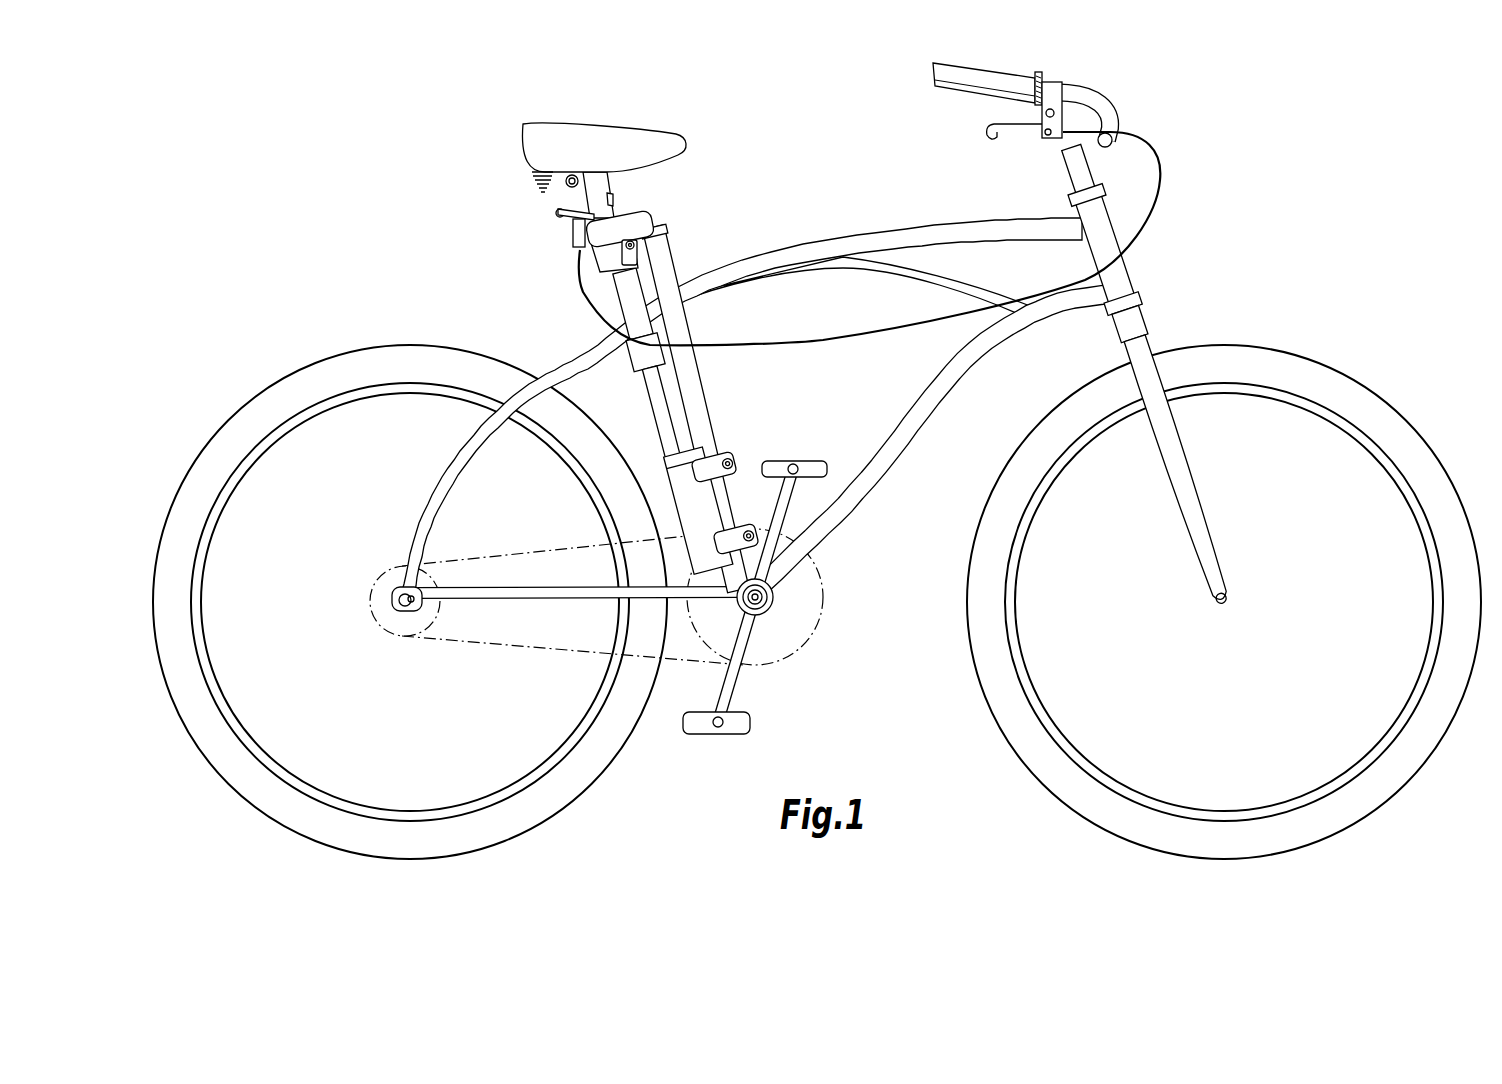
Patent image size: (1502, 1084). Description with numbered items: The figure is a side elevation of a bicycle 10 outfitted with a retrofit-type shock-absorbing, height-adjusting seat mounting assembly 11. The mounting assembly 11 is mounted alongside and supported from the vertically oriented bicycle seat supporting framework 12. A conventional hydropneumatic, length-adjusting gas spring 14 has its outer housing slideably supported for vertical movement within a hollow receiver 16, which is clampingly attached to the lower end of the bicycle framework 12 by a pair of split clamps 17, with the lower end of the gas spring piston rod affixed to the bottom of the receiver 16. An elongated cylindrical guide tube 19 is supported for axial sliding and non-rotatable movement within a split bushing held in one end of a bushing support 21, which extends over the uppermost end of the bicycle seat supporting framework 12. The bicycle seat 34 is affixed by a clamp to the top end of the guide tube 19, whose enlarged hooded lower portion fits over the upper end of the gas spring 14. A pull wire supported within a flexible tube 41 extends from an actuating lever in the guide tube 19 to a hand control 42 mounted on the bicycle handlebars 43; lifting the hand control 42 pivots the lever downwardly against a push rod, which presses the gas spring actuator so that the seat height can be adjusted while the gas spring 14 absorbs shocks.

The bicycle 10 is at (817, 461).
The seat mounting assembly 11 is at (633, 358).
The bicycle seat supporting framework 12 is at (704, 382).
The gas spring 14 is at (650, 396).
The hollow receiver 16 is at (668, 474).
The split clamps 17 is at (718, 456).
The guide tube 19 is at (598, 303).
The bushing support 21 is at (565, 246).
The bicycle seat 34 is at (604, 157).
The flexible tube 41 is at (830, 345).
The hand control 42 is at (1020, 140).
The bicycle handlebars 43 is at (1105, 108).